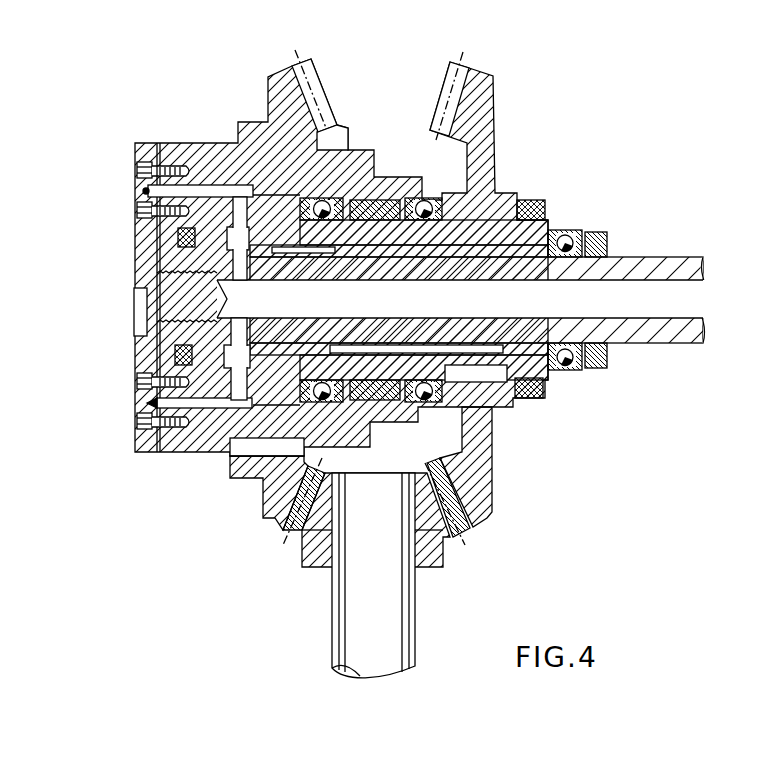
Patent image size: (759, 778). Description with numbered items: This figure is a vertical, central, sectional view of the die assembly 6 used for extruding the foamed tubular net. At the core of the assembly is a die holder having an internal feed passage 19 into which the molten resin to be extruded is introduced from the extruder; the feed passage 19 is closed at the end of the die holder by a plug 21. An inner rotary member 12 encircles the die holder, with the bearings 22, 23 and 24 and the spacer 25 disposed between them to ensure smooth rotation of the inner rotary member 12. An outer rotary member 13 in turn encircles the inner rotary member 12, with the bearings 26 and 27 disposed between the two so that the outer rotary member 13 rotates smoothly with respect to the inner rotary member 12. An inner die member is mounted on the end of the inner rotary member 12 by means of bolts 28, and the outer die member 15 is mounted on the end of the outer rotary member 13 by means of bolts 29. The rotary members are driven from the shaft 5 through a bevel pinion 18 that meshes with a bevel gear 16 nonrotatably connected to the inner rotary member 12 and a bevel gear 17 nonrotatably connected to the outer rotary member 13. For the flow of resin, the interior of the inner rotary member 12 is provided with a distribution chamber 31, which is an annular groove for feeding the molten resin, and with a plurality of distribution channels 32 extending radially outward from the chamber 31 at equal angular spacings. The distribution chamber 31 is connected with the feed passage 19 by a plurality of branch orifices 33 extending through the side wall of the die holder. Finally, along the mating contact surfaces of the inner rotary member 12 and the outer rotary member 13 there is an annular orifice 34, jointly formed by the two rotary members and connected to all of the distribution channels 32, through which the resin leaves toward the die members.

The shaft 5 is at (403, 615).
The die assembly 6 is at (528, 72).
The inner rotary member 12 is at (208, 212).
The outer rotary member 13 is at (167, 443).
The outer die member 15 is at (138, 448).
The bevel gear 16 is at (473, 478).
The bevel gear 17 is at (270, 502).
The bevel pinion 18 is at (435, 548).
The feed passage 19 is at (632, 308).
The plug 21 is at (147, 322).
The bearing 22 is at (556, 231).
The bearing 23 is at (303, 243).
The bearing 24 is at (178, 240).
The spacer 25 is at (393, 252).
The bearing 26 is at (407, 200).
The bearing 27 is at (333, 188).
The bolts 28 is at (137, 383).
The bolts 29 is at (137, 422).
The distribution chamber 31 is at (220, 228).
The distribution channels 32 is at (238, 240).
The branch orifices 33 is at (238, 270).
The annular orifice 34 is at (207, 405).